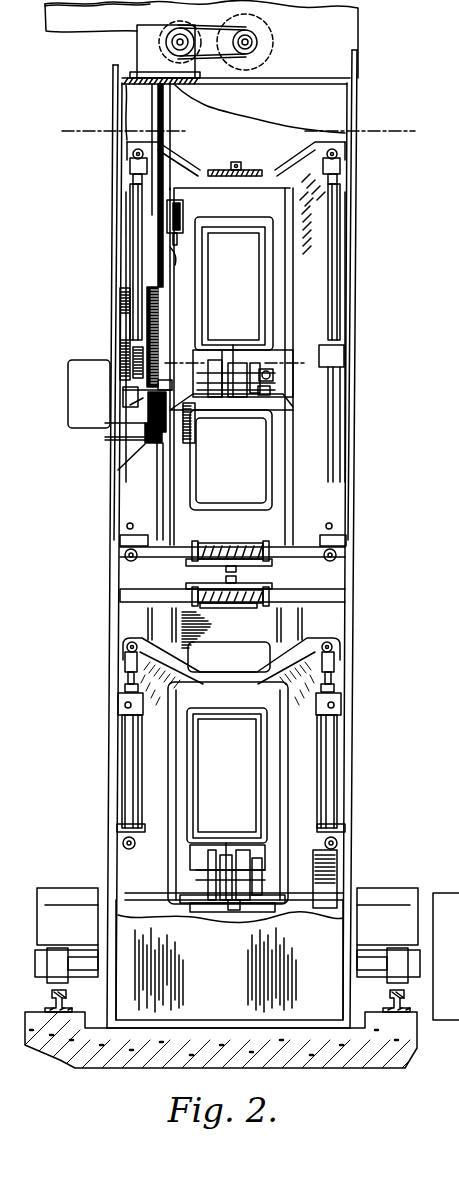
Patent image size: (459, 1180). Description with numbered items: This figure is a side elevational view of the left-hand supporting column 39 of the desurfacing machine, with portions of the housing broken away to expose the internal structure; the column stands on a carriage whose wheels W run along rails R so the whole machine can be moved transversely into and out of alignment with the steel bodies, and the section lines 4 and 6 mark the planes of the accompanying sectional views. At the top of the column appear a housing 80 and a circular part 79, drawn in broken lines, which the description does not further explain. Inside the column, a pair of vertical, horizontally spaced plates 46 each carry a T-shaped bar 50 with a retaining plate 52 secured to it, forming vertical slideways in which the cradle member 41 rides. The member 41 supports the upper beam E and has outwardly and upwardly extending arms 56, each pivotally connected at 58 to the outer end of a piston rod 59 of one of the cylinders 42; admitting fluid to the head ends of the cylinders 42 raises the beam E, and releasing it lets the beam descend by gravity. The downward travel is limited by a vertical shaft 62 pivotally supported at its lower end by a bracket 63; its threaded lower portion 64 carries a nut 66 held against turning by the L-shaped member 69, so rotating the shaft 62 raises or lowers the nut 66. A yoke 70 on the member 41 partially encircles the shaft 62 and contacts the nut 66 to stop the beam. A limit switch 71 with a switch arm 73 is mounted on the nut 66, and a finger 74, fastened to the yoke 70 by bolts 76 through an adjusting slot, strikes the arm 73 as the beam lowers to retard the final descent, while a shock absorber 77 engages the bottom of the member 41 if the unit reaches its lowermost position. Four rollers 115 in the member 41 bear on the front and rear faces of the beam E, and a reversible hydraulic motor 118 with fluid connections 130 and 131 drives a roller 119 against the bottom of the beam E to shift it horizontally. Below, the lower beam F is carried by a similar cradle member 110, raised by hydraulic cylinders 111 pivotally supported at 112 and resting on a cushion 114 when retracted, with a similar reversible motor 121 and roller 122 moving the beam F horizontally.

The motor 80 is at (137, 48).
The pulley 79 is at (272, 40).
The section line 4- 4 is at (80, 128).
The pivotal connection 58 is at (131, 152).
The arm 56 is at (190, 168).
The yoke 70 is at (167, 212).
The bolts 76 is at (181, 222).
The piston rod 59 is at (132, 262).
The finger 74 is at (181, 262).
The vertical shaft 62 is at (160, 274).
The L-shaped member 69 is at (121, 320).
The cradle member 41 is at (283, 289).
The section line 6- 6 is at (182, 359).
The rollers 115 is at (268, 236).
The roller 119 is at (236, 352).
The fluid connection 130 is at (273, 378).
The fluid connection 131 is at (272, 392).
The limit switch 71 is at (158, 384).
The nut 66 is at (123, 392).
The switch arm 73 is at (143, 398).
The lower portion of shaft 64 is at (166, 418).
The reversible hydraulic fluid-operated motor 118 is at (232, 397).
The bracket 63 is at (120, 452).
The bar 50 is at (180, 450).
The retaining plate 52 is at (155, 478).
The cylinders 42 is at (132, 497).
The column 39 is at (362, 485).
The shock absorber 77 is at (228, 547).
The vertical plates 46 is at (263, 525).
The hydraulic cylinders 111 is at (125, 752).
The cradle member 110 is at (275, 773).
The roller 122 is at (228, 850).
The pivotal support 112 is at (125, 840).
The cushion 114 is at (215, 900).
The reversible motor 121 is at (236, 895).
The wheels W is at (80, 990).
The rails R is at (55, 1003).
The beam E is at (262, 259).
The lower beam F is at (258, 772).